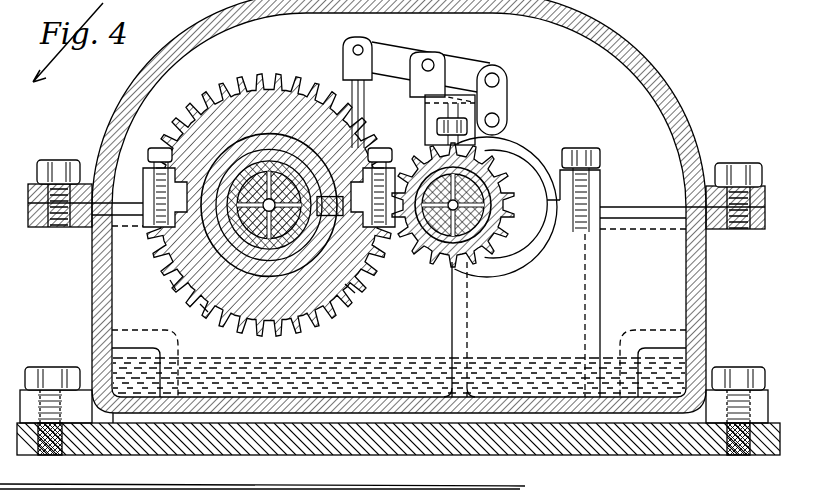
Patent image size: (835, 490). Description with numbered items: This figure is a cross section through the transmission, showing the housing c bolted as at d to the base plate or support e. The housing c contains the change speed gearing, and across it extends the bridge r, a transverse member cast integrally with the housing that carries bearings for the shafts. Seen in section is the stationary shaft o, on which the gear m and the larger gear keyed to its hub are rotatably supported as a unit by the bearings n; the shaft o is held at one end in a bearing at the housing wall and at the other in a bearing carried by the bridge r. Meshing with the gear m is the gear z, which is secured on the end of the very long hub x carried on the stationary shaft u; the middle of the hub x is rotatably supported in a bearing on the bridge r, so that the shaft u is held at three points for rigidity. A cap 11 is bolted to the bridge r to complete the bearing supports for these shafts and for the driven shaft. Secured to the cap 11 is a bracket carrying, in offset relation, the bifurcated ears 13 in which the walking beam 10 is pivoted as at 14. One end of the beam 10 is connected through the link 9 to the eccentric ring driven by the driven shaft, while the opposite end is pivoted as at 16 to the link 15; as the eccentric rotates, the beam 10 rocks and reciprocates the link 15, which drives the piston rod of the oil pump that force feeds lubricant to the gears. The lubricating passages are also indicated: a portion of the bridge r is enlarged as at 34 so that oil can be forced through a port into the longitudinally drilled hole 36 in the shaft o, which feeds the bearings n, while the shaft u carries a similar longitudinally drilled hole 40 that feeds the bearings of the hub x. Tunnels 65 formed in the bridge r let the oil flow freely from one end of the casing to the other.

The housing c is at (645, 56).
The base plate e is at (170, 456).
The tunnels 65 is at (113, 350).
The bolts d is at (44, 365).
The cap 11 is at (151, 152).
The longitudinally drilled hole 40 is at (160, 262).
The gear z is at (170, 280).
The stationary shaft u is at (200, 304).
The hub x is at (355, 293).
The stationary shaft o is at (506, 160).
The bearings n is at (512, 252).
The longitudinally drilled hole 36 is at (513, 165).
The gear m is at (472, 264).
The enlarged portion of bridge 34 is at (602, 280).
The bridge r is at (680, 310).
The pivot 16 is at (346, 46).
The link 15 is at (350, 98).
The walking beam 10 is at (470, 59).
The bifurcated ears 13 is at (418, 52).
The pivot 14 is at (431, 60).
The link 9 is at (507, 98).